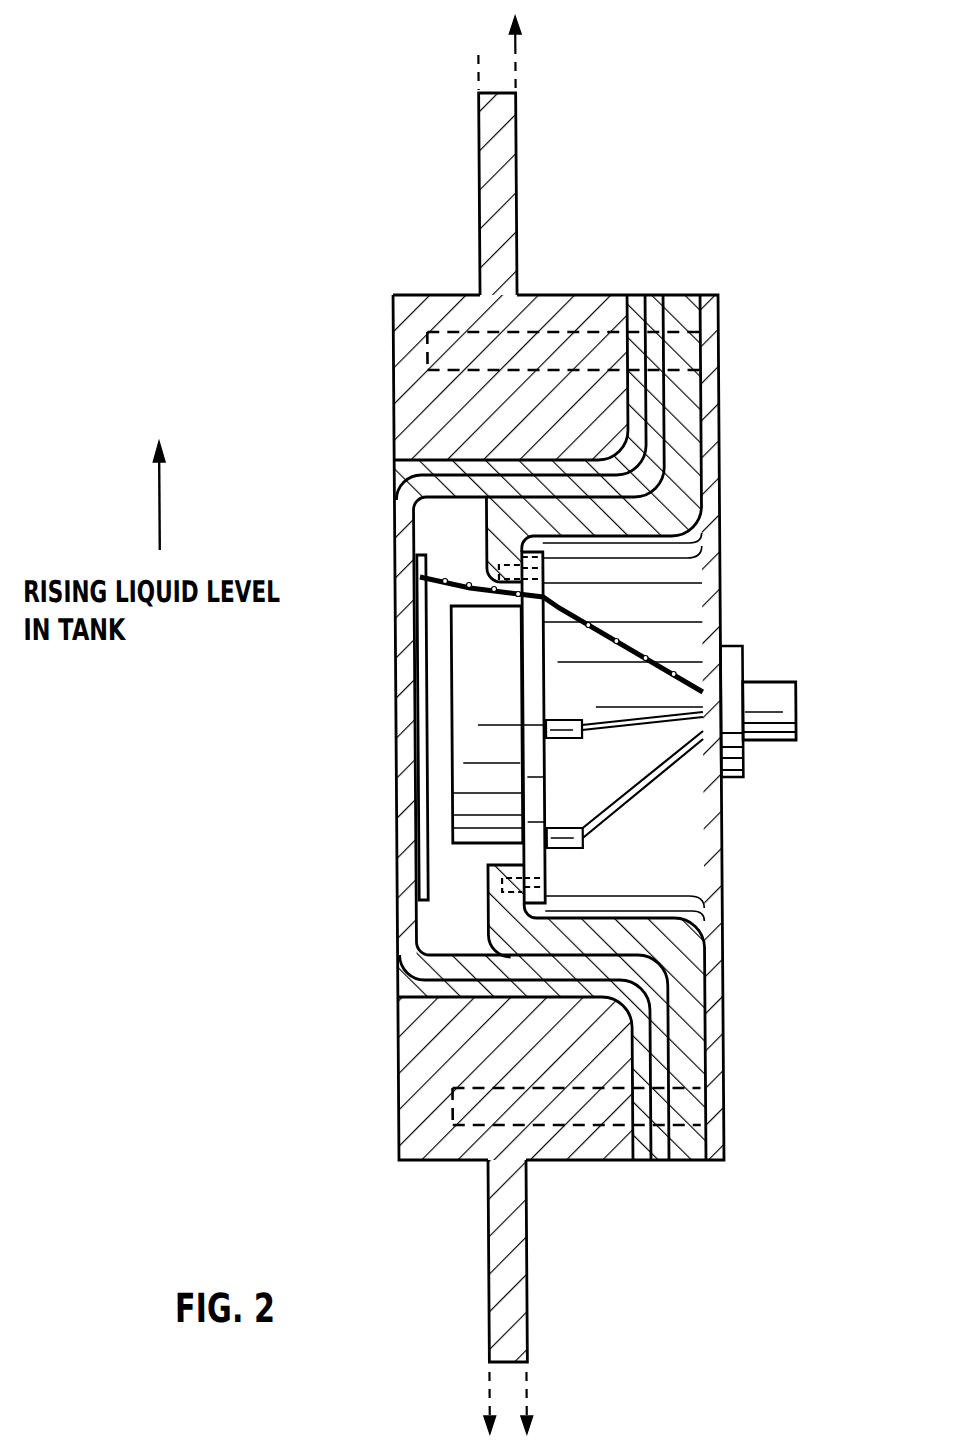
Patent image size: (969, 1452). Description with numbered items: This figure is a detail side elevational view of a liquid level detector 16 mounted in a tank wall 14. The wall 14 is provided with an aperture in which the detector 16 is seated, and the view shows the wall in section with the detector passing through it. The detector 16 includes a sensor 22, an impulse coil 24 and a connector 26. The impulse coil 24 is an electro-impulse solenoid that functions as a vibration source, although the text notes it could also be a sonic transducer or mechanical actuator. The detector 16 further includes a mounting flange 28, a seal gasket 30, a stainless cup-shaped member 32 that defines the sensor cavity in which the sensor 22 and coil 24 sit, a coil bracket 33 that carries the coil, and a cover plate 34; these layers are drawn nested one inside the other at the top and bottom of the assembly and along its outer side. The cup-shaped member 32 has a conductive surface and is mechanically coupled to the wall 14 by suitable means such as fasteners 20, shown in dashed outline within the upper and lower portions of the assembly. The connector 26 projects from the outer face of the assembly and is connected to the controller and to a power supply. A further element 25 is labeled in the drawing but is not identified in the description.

The tank wall 14 is at (468, 181).
The detector 16 is at (742, 618).
The fasteners 20 is at (695, 1107).
The sensor 22 is at (415, 577).
The impulse coil 24 is at (471, 850).
The upper magnet 25 is at (691, 350).
The connector 26 is at (770, 740).
The mounting flange 28 is at (582, 295).
The seal gasket 30 is at (633, 295).
The cup-shaped member 32 is at (655, 295).
The coil bracket 33 is at (680, 295).
The cover plate 34 is at (708, 295).